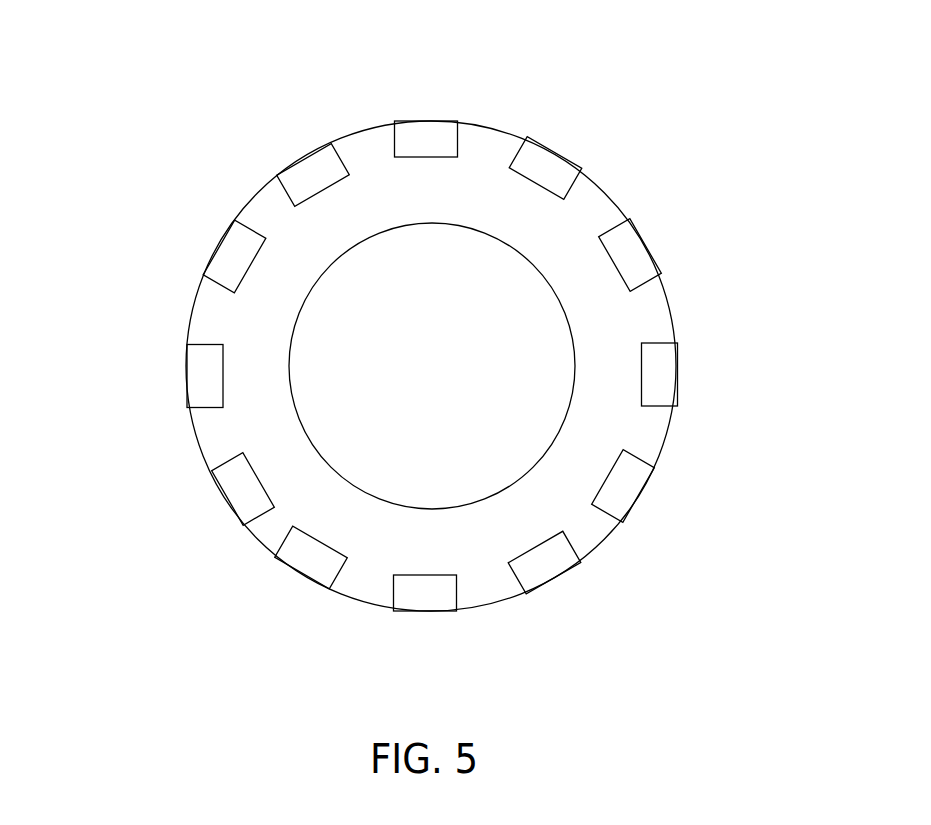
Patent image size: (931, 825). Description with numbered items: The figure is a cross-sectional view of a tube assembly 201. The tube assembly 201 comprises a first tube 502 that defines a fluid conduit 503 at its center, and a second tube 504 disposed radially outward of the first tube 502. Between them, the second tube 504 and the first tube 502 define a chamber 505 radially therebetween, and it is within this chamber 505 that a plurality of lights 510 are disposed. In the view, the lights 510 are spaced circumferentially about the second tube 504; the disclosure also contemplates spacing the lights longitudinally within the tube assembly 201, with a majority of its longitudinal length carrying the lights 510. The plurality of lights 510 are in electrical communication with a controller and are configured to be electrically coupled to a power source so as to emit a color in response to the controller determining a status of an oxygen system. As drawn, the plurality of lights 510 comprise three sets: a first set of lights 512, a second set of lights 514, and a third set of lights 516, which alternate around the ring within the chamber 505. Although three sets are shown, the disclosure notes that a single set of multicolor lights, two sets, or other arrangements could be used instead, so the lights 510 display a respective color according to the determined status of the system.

The tube assembly 201 is at (165, 85).
The first tube 502 is at (568, 320).
The fluid conduit 503 is at (441, 381).
The second tube 504 is at (672, 430).
The chamber 505 is at (636, 387).
The plurality of lights 510 is at (410, 120).
The first set of lights 512 is at (305, 175).
The second set of lights 514 is at (545, 167).
The third set of lights 516 is at (443, 128).